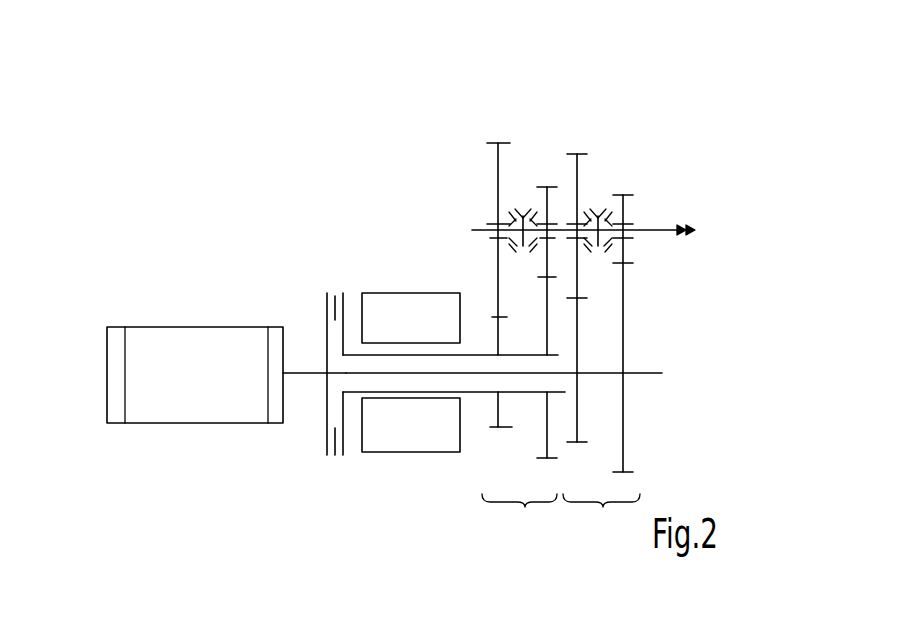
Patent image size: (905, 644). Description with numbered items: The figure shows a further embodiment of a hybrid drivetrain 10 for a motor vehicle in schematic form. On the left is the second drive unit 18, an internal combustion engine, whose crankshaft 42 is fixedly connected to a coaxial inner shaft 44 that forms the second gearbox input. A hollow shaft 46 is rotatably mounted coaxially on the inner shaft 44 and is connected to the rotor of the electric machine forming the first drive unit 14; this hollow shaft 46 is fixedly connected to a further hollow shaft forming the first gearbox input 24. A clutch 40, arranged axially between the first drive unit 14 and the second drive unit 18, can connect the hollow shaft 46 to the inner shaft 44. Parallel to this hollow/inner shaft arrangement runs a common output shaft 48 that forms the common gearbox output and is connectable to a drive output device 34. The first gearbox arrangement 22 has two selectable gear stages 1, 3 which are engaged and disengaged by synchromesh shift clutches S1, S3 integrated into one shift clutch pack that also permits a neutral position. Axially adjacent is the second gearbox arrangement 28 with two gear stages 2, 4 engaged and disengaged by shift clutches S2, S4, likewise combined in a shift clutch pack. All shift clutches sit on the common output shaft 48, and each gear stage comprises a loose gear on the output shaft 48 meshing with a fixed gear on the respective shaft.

The drivetrain 10 is at (703, 126).
The first drive unit 14 is at (402, 293).
The second drive unit 18 is at (197, 424).
The first gearbox arrangement 22 is at (519, 514).
The first gearbox input 24 is at (558, 355).
The second gearbox arrangement 28 is at (601, 514).
The drive output device 34 is at (690, 233).
The clutch 40 is at (333, 287).
The crankshaft 42 is at (307, 374).
The inner shaft 44 is at (643, 372).
The hollow shaft 46 is at (487, 355).
The common output shaft 48 is at (654, 229).
The gear stage 1 is at (499, 273).
The gear stage 2 is at (577, 287).
The gear stage 3 is at (547, 311).
The gear stage 4 is at (623, 323).
The synchromesh shift clutch S1 is at (515, 209).
The shift clutch S2 is at (590, 209).
The synchromesh shift clutch S3 is at (531, 209).
The shift clutch S4 is at (606, 209).